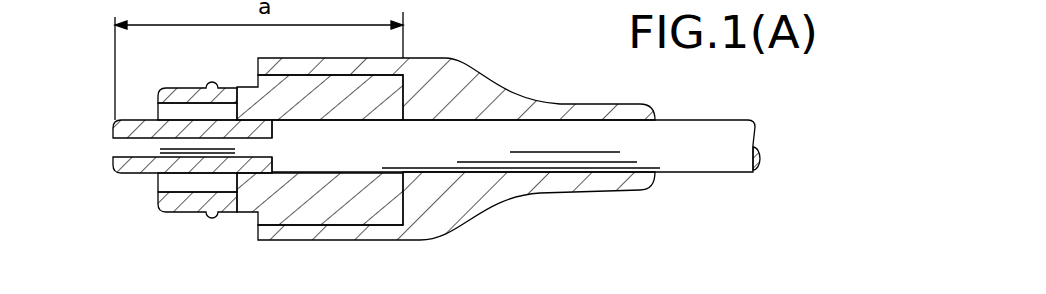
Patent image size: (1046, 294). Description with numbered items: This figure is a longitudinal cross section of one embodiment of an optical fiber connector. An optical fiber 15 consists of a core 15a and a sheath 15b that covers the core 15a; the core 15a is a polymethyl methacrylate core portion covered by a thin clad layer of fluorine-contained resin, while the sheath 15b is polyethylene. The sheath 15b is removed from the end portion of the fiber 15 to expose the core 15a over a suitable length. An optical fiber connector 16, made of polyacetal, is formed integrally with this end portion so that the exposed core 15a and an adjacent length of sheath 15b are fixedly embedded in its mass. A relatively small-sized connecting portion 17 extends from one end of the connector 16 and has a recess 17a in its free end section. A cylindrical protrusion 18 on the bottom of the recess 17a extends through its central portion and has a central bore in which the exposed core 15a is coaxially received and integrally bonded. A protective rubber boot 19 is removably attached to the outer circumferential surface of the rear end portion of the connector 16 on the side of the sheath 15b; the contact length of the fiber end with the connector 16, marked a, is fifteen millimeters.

The optical fiber 15 is at (456, 146).
The core 15a is at (115, 144).
The sheath 15b is at (695, 160).
The optical fiber connector 16 is at (258, 188).
The connecting portion 17 is at (190, 213).
The recess 17a is at (158, 185).
The cylindrical protrusion 18 is at (141, 130).
The protective rubber boot 19 is at (420, 77).